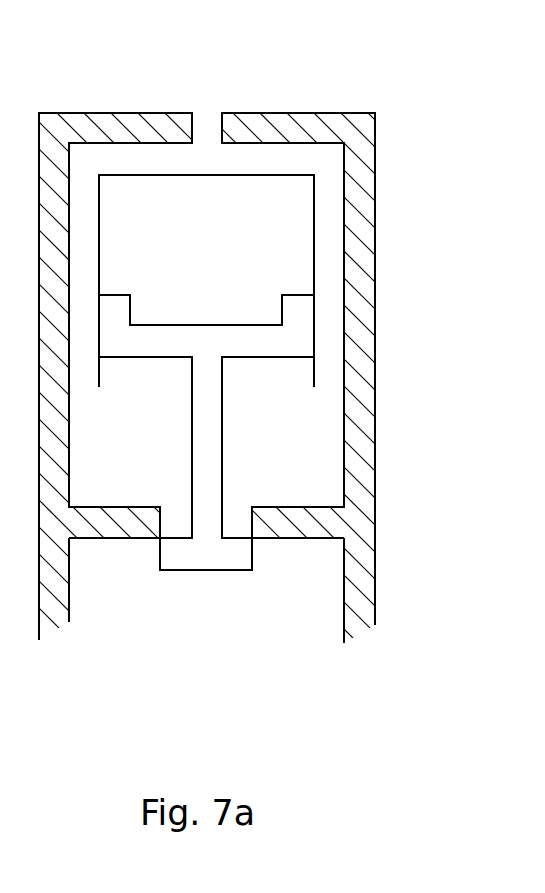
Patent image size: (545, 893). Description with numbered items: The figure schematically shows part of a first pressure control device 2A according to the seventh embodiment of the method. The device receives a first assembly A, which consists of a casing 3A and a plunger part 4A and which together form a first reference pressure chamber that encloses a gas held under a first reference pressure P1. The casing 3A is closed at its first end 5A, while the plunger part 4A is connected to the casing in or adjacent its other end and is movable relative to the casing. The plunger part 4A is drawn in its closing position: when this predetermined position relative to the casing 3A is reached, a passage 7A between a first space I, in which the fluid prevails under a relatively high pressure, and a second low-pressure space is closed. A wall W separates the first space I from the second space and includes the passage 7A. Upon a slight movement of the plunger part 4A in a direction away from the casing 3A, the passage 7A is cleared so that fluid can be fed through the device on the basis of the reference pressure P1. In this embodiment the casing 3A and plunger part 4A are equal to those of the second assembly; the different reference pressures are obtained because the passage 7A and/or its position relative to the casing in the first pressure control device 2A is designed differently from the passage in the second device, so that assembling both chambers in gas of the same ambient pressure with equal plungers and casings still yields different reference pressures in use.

The pressure control device 2A is at (400, 312).
The casing 3A is at (302, 175).
The first end 5A is at (251, 175).
The first assembly A is at (297, 315).
The plunger part 4A is at (290, 342).
The passage 7A is at (176, 526).
The wall W is at (303, 525).
The first reference pressure P1 is at (225, 223).
The first space I is at (122, 630).